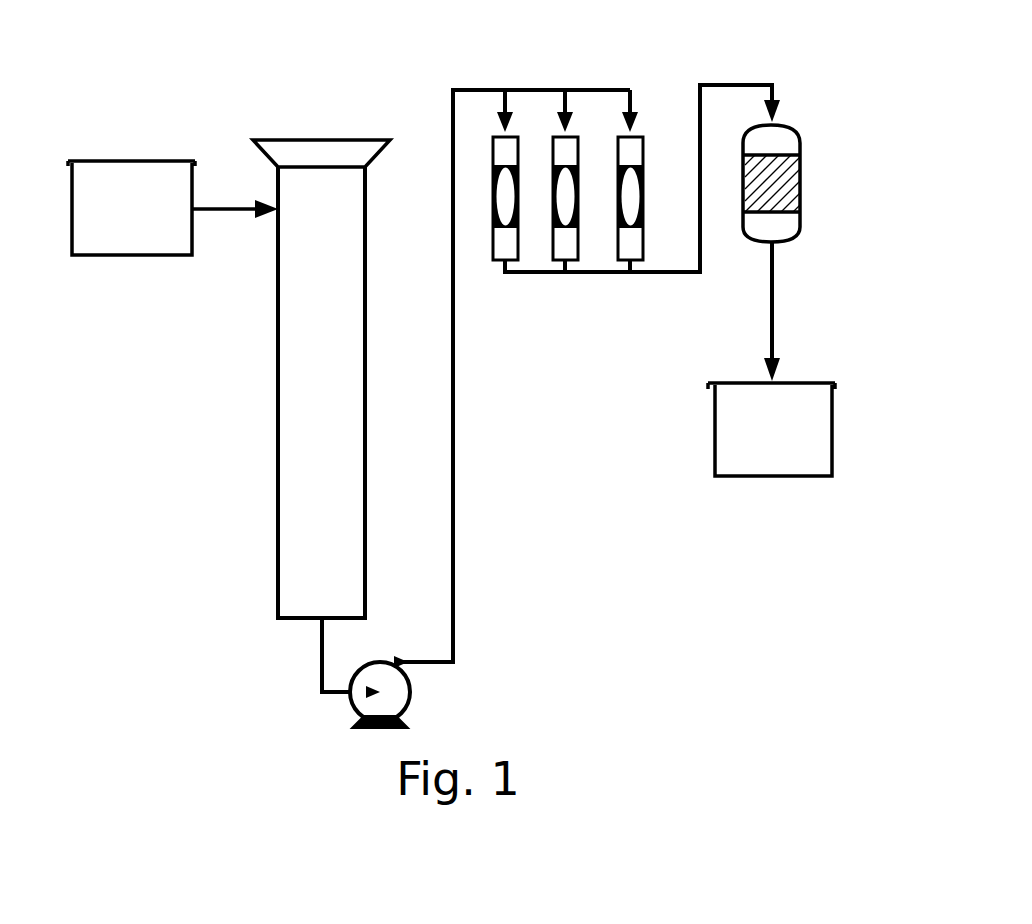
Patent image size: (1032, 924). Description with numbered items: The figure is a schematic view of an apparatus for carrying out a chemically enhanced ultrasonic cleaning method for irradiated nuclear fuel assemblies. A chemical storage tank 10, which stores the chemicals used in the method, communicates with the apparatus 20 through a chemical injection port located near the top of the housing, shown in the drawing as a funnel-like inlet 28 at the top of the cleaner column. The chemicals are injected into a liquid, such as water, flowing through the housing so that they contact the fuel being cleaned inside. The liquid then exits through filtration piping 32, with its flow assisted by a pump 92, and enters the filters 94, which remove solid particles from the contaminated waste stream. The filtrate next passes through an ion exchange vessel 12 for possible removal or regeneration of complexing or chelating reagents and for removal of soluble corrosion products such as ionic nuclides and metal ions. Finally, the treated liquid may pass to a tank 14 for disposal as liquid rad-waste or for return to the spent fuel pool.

The chemical storage tank 10 is at (155, 160).
The ion exchange vessel 12 is at (802, 165).
The liquid radwaste tank 14 is at (714, 411).
The apparatus 20 is at (260, 507).
The funnel inlet 28 is at (319, 139).
The filtration piping 32 is at (320, 670).
The pump 92 is at (412, 690).
The filters 94 is at (557, 70).